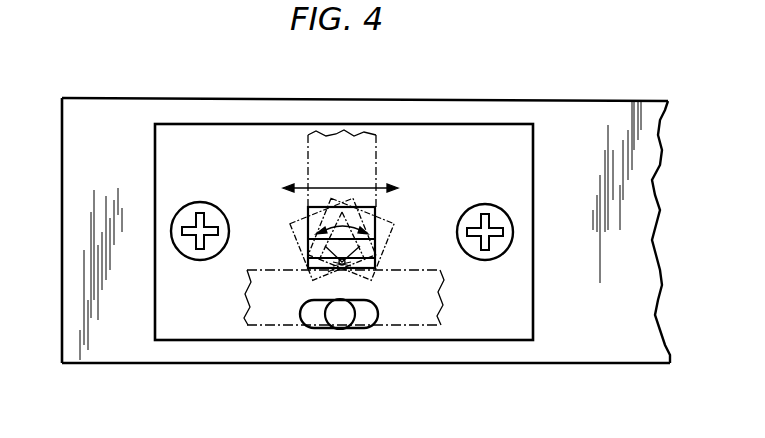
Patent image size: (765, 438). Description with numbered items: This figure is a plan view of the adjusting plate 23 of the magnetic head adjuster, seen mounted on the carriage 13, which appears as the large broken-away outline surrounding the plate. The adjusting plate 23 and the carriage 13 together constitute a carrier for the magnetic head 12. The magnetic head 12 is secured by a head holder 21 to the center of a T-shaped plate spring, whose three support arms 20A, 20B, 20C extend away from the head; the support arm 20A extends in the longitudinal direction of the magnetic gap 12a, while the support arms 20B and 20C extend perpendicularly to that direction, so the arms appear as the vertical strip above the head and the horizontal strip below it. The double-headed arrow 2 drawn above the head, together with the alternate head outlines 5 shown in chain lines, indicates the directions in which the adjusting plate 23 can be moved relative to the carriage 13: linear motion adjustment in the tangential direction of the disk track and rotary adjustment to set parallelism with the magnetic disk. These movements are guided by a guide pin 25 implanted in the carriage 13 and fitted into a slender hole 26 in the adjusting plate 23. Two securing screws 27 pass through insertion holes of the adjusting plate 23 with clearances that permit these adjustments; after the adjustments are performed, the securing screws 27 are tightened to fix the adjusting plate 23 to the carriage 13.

The carriage 13 is at (646, 118).
The adjusting plate 23 is at (523, 165).
The securing screws 27 is at (206, 202).
The support arm 20A is at (350, 136).
The tape travel direction 2 is at (358, 188).
The head holder 21 is at (308, 215).
The head pivoted positions 5 is at (376, 222).
The magnetic head 12 is at (352, 268).
The magnetic gap 12a is at (333, 274).
The support arm 20B is at (444, 312).
The support arm 20C is at (245, 292).
The guide pin 25 is at (333, 322).
The slender hole 26 is at (368, 322).